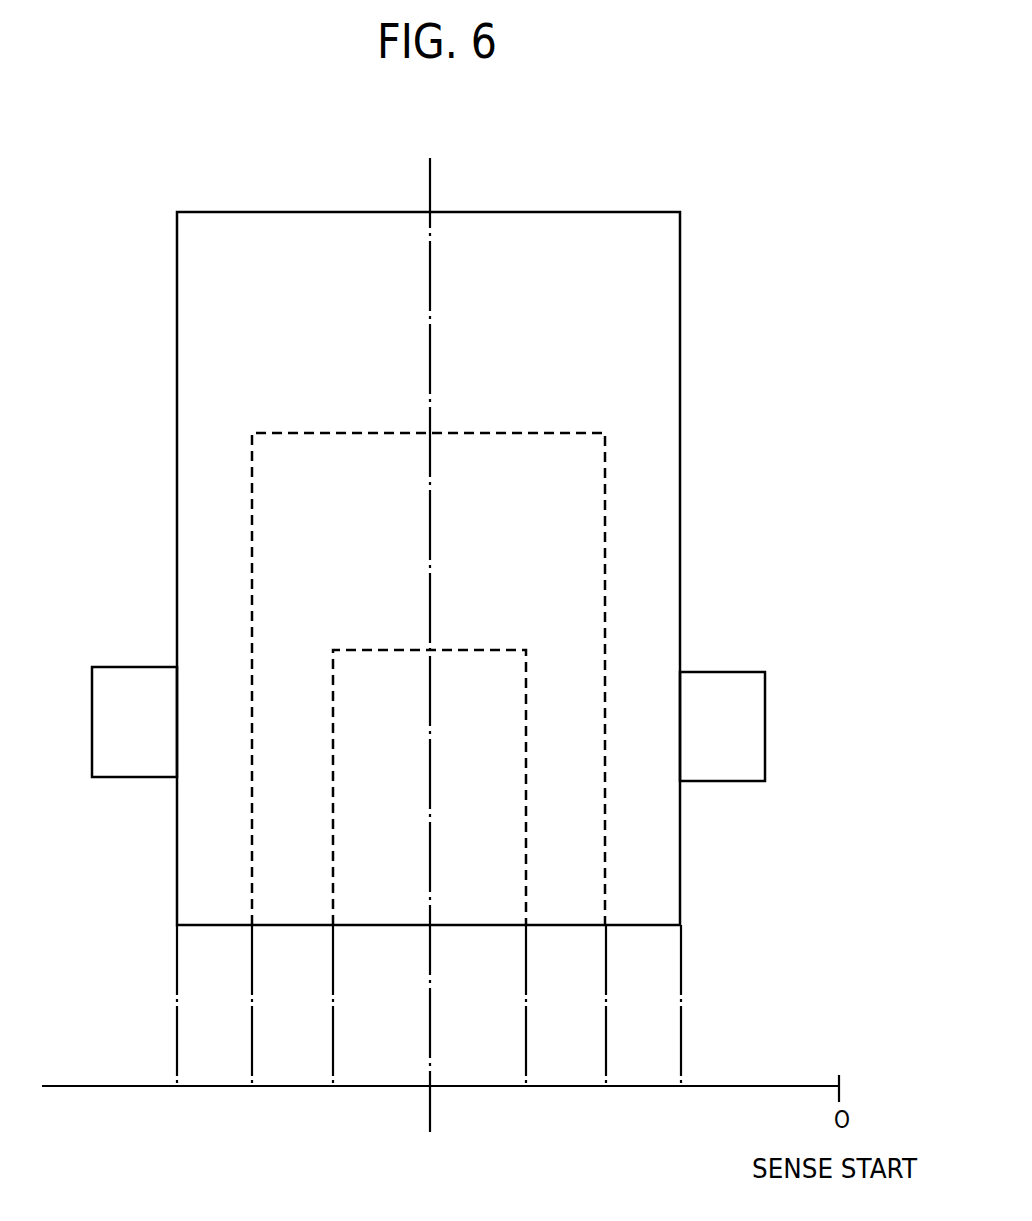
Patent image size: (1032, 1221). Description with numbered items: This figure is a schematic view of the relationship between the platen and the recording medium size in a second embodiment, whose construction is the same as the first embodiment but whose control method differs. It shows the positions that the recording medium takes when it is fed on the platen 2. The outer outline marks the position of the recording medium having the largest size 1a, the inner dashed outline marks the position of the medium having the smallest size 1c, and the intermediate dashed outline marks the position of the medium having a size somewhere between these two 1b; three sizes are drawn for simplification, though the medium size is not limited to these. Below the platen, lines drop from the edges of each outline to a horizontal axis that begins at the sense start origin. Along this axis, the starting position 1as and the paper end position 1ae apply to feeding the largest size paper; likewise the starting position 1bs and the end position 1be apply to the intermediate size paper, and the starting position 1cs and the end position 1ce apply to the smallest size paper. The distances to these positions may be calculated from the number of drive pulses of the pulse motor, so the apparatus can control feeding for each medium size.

The position of the recording medium having the largest size 1a is at (667, 455).
The position of the recording medium having an intermediate size 1b is at (582, 555).
The position of the recording medium having the smallest size 1c is at (509, 687).
The platen 2 is at (743, 718).
The paper end position for 1a size paper 1ae is at (169, 1022).
The end position for 1b size paper 1be is at (255, 1022).
The end position for 1c size paper 1ce is at (339, 1022).
The starting position for 1c size paper 1cs is at (524, 1022).
The starting position for 1b size paper 1bs is at (604, 1022).
The starting position for 1a size paper 1as is at (681, 1022).